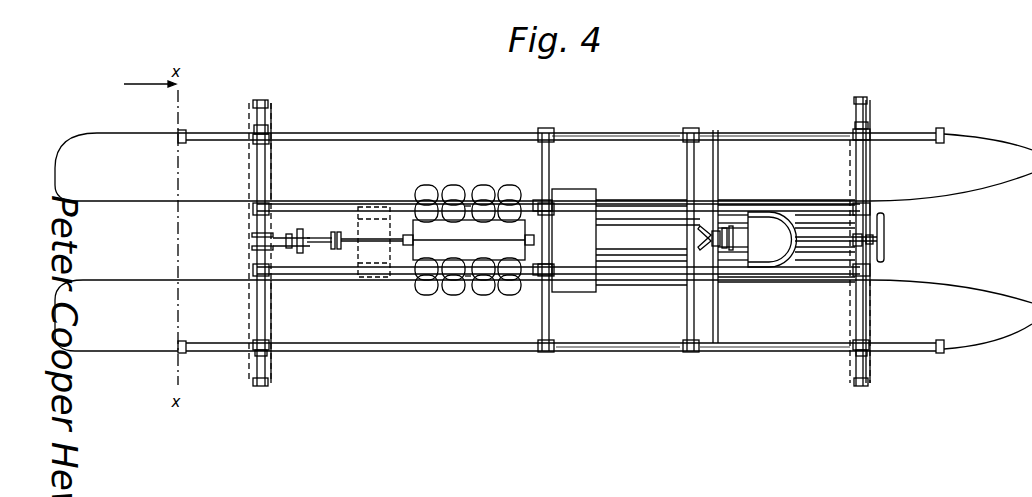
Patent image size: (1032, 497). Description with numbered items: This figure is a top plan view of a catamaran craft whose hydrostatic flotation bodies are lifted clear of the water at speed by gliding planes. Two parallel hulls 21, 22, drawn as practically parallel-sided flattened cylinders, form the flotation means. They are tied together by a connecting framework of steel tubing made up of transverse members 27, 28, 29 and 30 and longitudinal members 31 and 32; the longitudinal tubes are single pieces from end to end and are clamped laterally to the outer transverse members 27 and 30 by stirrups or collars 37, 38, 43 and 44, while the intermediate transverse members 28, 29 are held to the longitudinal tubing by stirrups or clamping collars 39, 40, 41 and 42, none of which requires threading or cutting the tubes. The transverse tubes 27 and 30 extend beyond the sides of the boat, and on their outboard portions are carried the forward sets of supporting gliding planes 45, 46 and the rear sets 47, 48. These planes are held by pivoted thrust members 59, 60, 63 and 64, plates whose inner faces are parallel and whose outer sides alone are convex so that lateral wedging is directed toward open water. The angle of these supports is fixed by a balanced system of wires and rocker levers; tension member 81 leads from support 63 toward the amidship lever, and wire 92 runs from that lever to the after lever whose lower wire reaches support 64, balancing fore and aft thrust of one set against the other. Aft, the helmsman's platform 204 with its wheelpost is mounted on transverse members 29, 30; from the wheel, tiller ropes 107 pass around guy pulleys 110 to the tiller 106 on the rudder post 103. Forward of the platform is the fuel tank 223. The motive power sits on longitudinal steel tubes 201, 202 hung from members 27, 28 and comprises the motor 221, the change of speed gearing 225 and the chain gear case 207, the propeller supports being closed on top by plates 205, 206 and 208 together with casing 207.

The parallel hull 21 is at (473, 272).
The parallel hull 22 is at (440, 189).
The transverse member 27 is at (256, 175).
The intermediate transverse member 28 is at (549, 178).
The intermediate transverse member 29 is at (687, 180).
The transverse member 30 is at (856, 182).
The longitudinal member 31 is at (604, 352).
The longitudinal member 32 is at (612, 133).
The stirrup or collar 37 is at (268, 348).
The stirrup or collar 38 is at (268, 141).
The stirrup or clamping collar 39 is at (550, 345).
The stirrup or clamping collar 40 is at (549, 139).
The stirrup or clamping collar 41 is at (684, 342).
The stirrup or clamping collar 42 is at (688, 140).
The stirrup or collar 43 is at (855, 343).
The stirrup or collar 44 is at (855, 134).
The forward set of supporting gliding planes 45 is at (272, 372).
The forward set of supporting gliding planes 46 is at (270, 126).
The rear set of supporting gliding planes 47 is at (869, 368).
The rear set of supporting gliding planes 48 is at (871, 114).
The thrust member 59 is at (262, 102).
The thrust member 60 is at (258, 130).
The thrust member 63 is at (256, 354).
The thrust member 64 is at (260, 386).
The tension member 81 is at (373, 133).
The tension member 92 is at (772, 133).
The rudder post 103 is at (884, 240).
The tiller 106 is at (885, 252).
The tiller ropes 107 is at (730, 226).
The guy pulleys 110 is at (720, 227).
The longitudinal steel tube 201 is at (558, 197).
The longitudinal steel tube 202 is at (333, 274).
The platform 204 is at (786, 241).
The plate 205 is at (302, 232).
The plate 206 is at (303, 262).
The chain gear case 207 is at (302, 249).
The plate 208 is at (288, 238).
The motor 221 is at (465, 238).
The fuel tank 223 is at (616, 240).
The change of speed gearing 225 is at (375, 268).